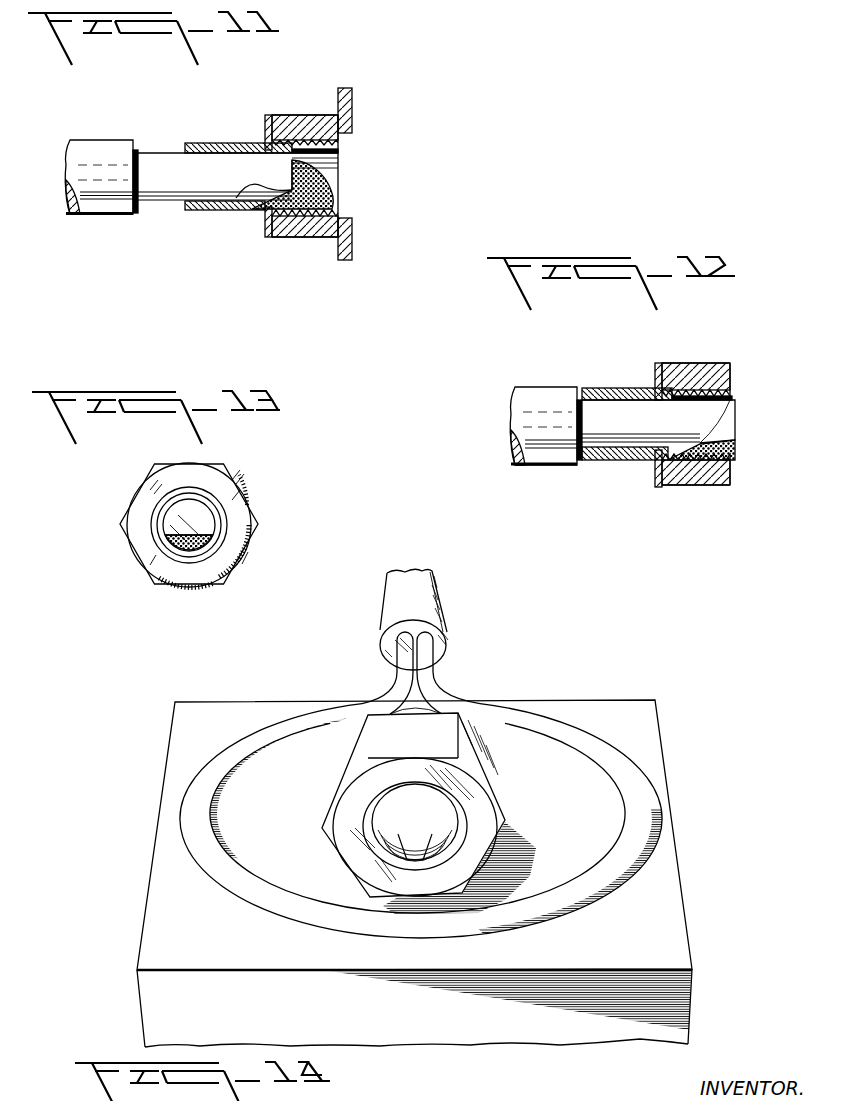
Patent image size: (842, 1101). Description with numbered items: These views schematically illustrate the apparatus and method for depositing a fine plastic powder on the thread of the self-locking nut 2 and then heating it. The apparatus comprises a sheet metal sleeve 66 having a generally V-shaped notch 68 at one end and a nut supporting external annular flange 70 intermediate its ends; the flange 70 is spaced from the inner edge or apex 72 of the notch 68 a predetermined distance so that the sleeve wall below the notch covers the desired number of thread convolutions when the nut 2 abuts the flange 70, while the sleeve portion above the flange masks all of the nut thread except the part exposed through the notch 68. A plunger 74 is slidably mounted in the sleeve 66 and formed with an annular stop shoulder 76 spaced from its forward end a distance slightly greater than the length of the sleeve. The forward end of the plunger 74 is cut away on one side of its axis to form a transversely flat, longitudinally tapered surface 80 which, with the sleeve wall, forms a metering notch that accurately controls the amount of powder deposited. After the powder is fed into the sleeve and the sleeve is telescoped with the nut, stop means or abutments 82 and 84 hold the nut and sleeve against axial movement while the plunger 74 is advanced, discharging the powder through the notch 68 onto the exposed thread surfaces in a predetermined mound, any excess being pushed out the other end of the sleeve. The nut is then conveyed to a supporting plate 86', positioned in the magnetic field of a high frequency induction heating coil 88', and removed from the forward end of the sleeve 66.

In FIG. 11, the nut 2 is at (286, 115).
In FIG. 12, the nut 2 is at (707, 366).
In FIG. 13, the nut 2 is at (147, 505).
In FIG. 11, the sheet metal sleeve 66 is at (212, 143).
In FIG. 12, the sheet metal sleeve 66 is at (593, 462).
In FIG. 13, the sheet metal sleeve 66 is at (168, 486).
In FIG. 11, the V-shaped notch 68 is at (342, 182).
In FIG. 12, the V-shaped notch 68 is at (737, 452).
In FIG. 11, the annular flange 70 is at (267, 224).
In FIG. 12, the annular flange 70 is at (655, 482).
In FIG. 13, the annular flange 70 is at (215, 465).
In FIG. 11, the apex of the notch 72 is at (297, 237).
In FIG. 12, the apex of the notch 72 is at (672, 485).
In FIG. 11, the plunger 74 is at (141, 153).
In FIG. 12, the plunger 74 is at (613, 410).
In FIG. 13, the plunger 74 is at (198, 520).
In FIG. 11, the annular stop shoulder 76 is at (139, 214).
In FIG. 12, the annular stop shoulder 76 is at (577, 398).
In FIG. 11, the tapered surface 80 is at (241, 212).
In FIG. 12, the tapered surface 80 is at (735, 416).
In FIG. 13, the tapered surface 80 is at (166, 536).
In FIG. 11, the stop means 82 is at (352, 111).
In FIG. 11, the stop means 84 is at (352, 237).
In FIG. 14, the supporting plate 86' is at (452, 873).
In FIG. 14, the high frequency induction heating coil 88' is at (421, 753).